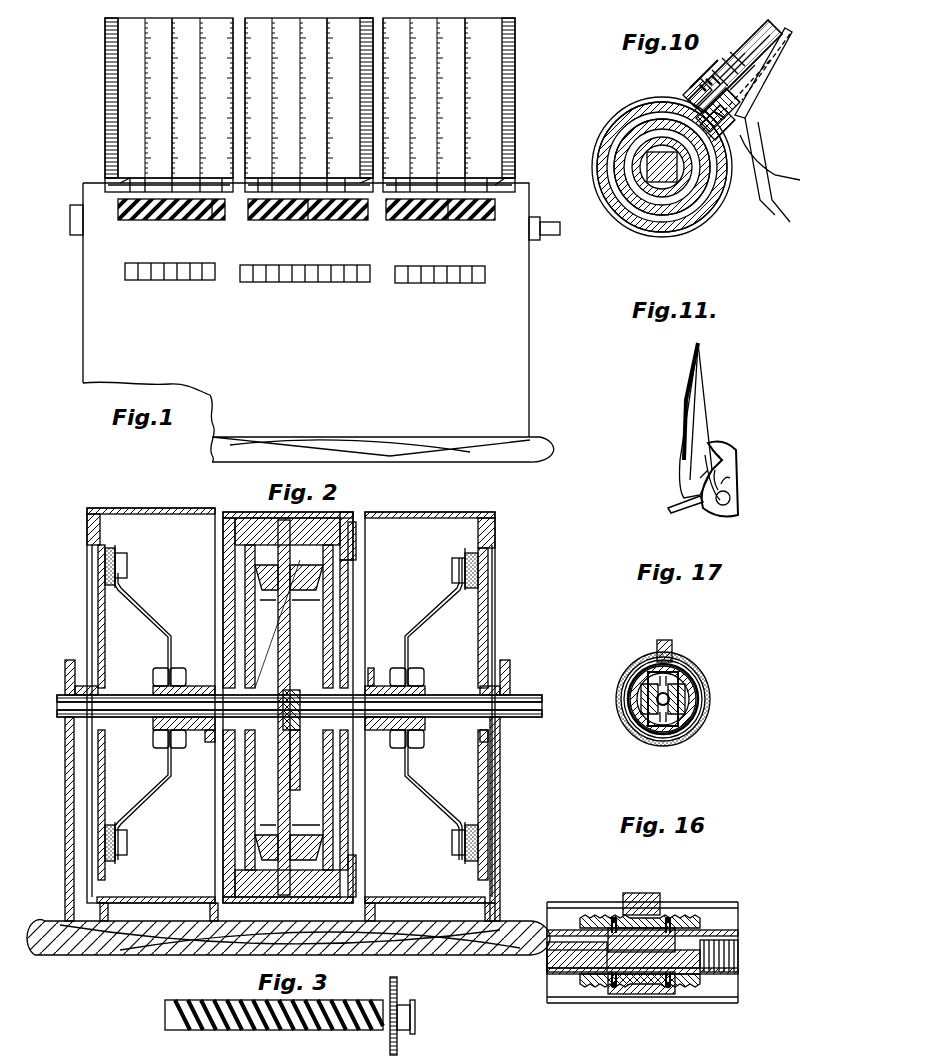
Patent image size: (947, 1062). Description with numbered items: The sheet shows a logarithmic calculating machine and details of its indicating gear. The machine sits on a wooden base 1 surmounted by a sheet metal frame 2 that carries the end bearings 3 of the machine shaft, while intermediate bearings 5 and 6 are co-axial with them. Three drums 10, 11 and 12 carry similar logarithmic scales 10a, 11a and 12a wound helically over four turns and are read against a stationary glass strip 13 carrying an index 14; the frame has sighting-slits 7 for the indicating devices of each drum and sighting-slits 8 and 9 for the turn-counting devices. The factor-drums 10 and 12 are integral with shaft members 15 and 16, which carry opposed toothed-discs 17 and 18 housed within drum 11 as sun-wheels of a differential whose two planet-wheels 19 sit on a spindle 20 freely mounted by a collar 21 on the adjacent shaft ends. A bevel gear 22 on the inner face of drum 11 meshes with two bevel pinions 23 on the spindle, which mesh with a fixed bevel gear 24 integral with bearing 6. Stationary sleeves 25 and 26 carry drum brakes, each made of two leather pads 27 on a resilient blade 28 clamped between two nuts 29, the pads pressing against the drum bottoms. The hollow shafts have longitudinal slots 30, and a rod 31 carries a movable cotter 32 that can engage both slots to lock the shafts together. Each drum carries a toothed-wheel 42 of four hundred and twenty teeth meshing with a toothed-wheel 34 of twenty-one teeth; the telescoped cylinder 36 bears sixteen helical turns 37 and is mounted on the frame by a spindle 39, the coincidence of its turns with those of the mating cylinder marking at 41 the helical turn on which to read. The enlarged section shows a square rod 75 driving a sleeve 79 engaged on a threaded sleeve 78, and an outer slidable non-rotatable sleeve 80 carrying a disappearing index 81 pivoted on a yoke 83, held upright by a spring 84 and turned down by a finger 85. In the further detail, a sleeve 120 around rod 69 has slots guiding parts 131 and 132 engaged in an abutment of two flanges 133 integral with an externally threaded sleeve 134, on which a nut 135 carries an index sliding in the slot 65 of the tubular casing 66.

In FIG. 1, the wooden base 1 is at (510, 458).
In FIG. 2, the wooden base 1 is at (420, 940).
In FIG. 1, the sheet metal frame 2 is at (80, 380).
In FIG. 2, the sheet metal frame 2 is at (87, 860).
In FIG. 2, the bearings 3 is at (65, 672).
In FIG. 2, the intermediate bearing 5 is at (360, 745).
In FIG. 2, the intermediate bearing 6 is at (210, 745).
In FIG. 1, the sighting-slits 7 is at (125, 225).
In FIG. 1, the sighting-slit 8 is at (143, 282).
In FIG. 1, the sighting-slit 9 is at (312, 284).
In FIG. 1, the factor-drum 10 is at (430, 33).
In FIG. 2, the factor-drum 10 is at (404, 512).
In FIG. 1, the logarithmic scale 10a is at (470, 42).
In FIG. 1, the central drum 11 is at (300, 30).
In FIG. 2, the central drum 11 is at (232, 512).
In FIG. 1, the logarithmic scale 11a is at (325, 40).
In FIG. 1, the factor-drum 12 is at (158, 25).
In FIG. 2, the factor-drum 12 is at (140, 508).
In FIG. 1, the logarithmic scale 12a is at (170, 50).
In FIG. 1, the glass strip 13 is at (500, 184).
In FIG. 1, the index 14 is at (128, 184).
In FIG. 1, the shaft member 15 is at (535, 240).
In FIG. 2, the shaft member 15 is at (452, 730).
In FIG. 1, the shaft member 16 is at (70, 214).
In FIG. 2, the shaft member 16 is at (65, 725).
In FIG. 2, the toothed-disc 17 is at (320, 640).
In FIG. 2, the toothed-disc 18 is at (248, 605).
In FIG. 2, the planet-wheels 19 is at (300, 585).
In FIG. 2, the spindle 20 is at (283, 625).
In FIG. 2, the collar 21 is at (320, 688).
In FIG. 2, the bevel gear 22 is at (356, 532).
In FIG. 2, the bevel pinions 23 is at (350, 548).
In FIG. 2, the bevel gear 24 is at (240, 530).
In FIG. 2, the sleeve 25 is at (195, 686).
In FIG. 2, the sleeve 26 is at (380, 686).
In FIG. 2, the leather pads 27 is at (108, 550).
In FIG. 2, the resilient blade 28 is at (432, 612).
In FIG. 2, the nuts 29 is at (410, 674).
In FIG. 2, the longitudinal slots 30 is at (286, 692).
In FIG. 1, the rod 31 is at (560, 228).
In FIG. 2, the rod 31 is at (525, 720).
In FIG. 10, the rod 31 is at (598, 200).
In FIG. 2, the movable cotter 32 is at (296, 740).
In FIG. 3, the toothed-wheel 34 is at (398, 1046).
In FIG. 3, the cylinder 36 is at (340, 1000).
In FIG. 3, the helical turns 37 is at (235, 1030).
In FIG. 3, the spindle 39 is at (410, 1018).
In FIG. 1, the coincidence indication 41 is at (214, 221).
In FIG. 1, the toothed-wheels 42 is at (105, 35).
In FIG. 2, the toothed-wheels 42 is at (90, 510).
In FIG. 16, the slot 65 is at (735, 910).
In FIG. 10, the tubular casing 66 is at (715, 215).
In FIG. 17, the tubular casing 66 is at (620, 695).
In FIG. 16, the tubular casing 66 is at (725, 1003).
In FIG. 16, the rod 69 is at (738, 960).
In FIG. 10, the square rod 75 is at (662, 182).
In FIG. 10, the threaded sleeve 78 is at (620, 130).
In FIG. 10, the sleeve 79 is at (630, 195).
In FIG. 10, the sleeve 80 is at (680, 225).
In FIG. 10, the index 81 is at (768, 95).
In FIG. 11, the index 81 is at (695, 395).
In FIG. 10, the yoke 83 is at (685, 92).
In FIG. 10, the spring 84 is at (740, 40).
In FIG. 11, the spring 84 is at (668, 508).
In FIG. 10, the finger 85 is at (715, 72).
In FIG. 11, the finger 85 is at (730, 480).
In FIG. 16, the sleeve 120 is at (700, 937).
In FIG. 17, the part 131 is at (700, 672).
In FIG. 16, the part 131 is at (650, 930).
In FIG. 17, the part 132 is at (645, 730).
In FIG. 16, the part 132 is at (660, 990).
In FIG. 16, the flanges 133 is at (690, 928).
In FIG. 17, the threaded sleeve 134 is at (706, 711).
In FIG. 16, the threaded sleeve 134 is at (595, 915).
In FIG. 17, the nut 135 is at (672, 652).
In FIG. 16, the nut 135 is at (655, 895).